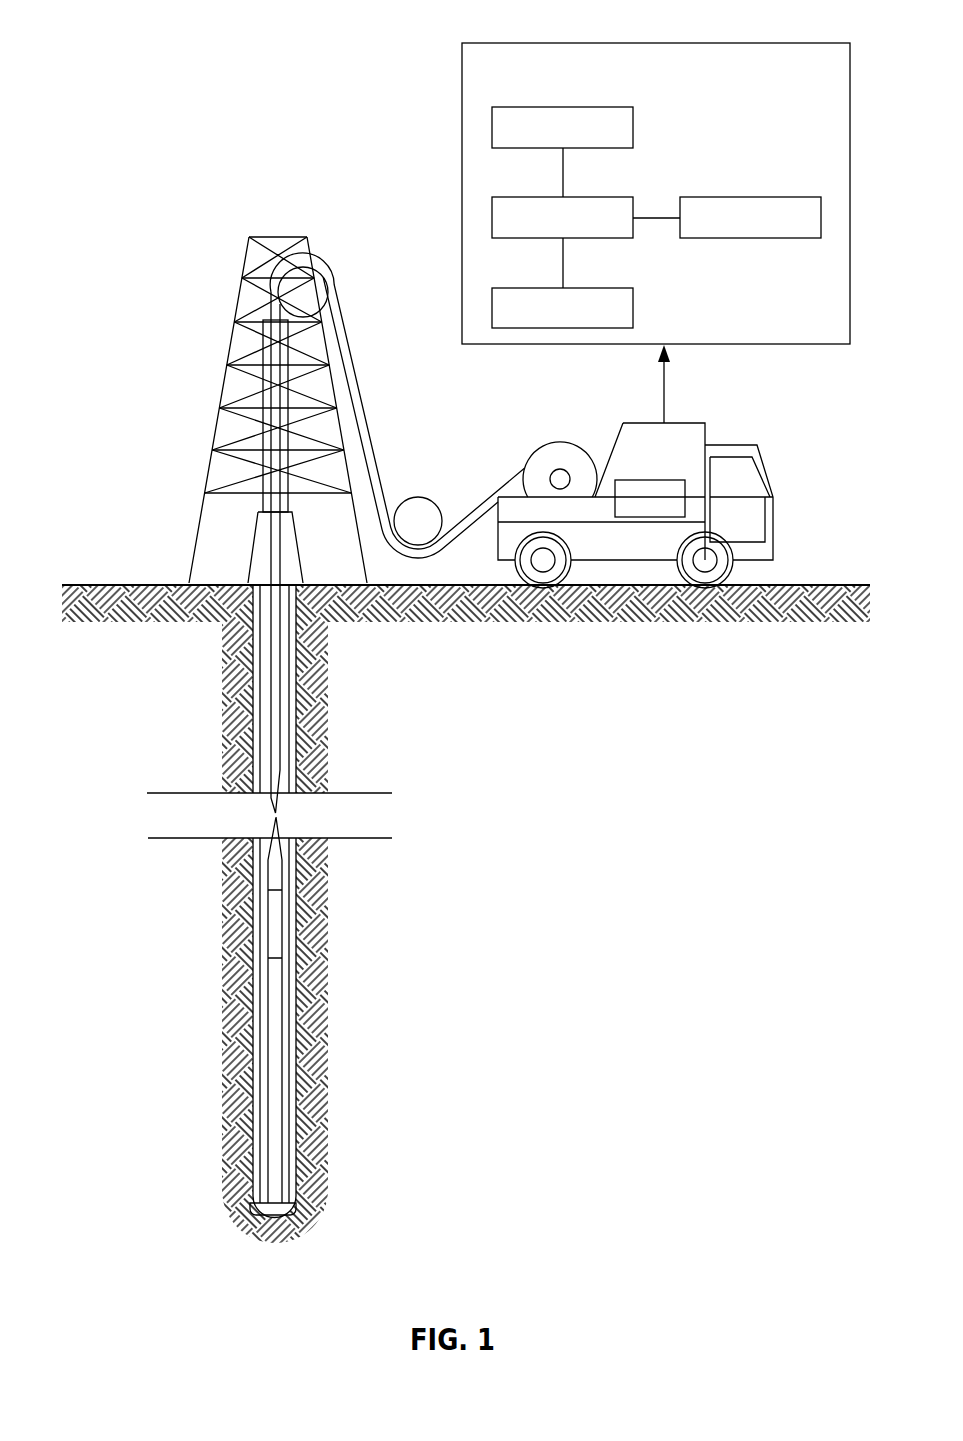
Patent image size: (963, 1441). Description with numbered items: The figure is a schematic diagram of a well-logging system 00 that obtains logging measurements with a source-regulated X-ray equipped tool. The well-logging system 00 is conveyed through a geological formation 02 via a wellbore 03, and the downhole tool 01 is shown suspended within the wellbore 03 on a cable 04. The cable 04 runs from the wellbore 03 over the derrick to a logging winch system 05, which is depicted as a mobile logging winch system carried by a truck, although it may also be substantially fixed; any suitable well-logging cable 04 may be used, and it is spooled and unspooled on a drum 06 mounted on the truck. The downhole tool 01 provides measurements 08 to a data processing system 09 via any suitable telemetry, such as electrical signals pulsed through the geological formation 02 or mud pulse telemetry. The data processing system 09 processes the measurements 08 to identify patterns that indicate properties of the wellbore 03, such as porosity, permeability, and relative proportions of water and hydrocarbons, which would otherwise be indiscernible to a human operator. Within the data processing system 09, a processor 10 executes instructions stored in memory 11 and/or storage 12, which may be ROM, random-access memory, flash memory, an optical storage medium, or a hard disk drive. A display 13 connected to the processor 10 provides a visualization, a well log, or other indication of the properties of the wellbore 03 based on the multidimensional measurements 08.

The well-logging system 00 is at (200, 228).
The downhole tool 01 is at (265, 905).
The geological formation 02 is at (235, 997).
The wellbore 03 is at (252, 645).
The cable 04 is at (367, 408).
The logging winch system 05 is at (633, 393).
The drum 06 is at (562, 440).
The measurements 08 is at (667, 393).
The data processing system 09 is at (503, 43).
The processor 10 is at (532, 197).
The memory 11 is at (532, 107).
The storage 12 is at (532, 288).
The display 13 is at (722, 197).